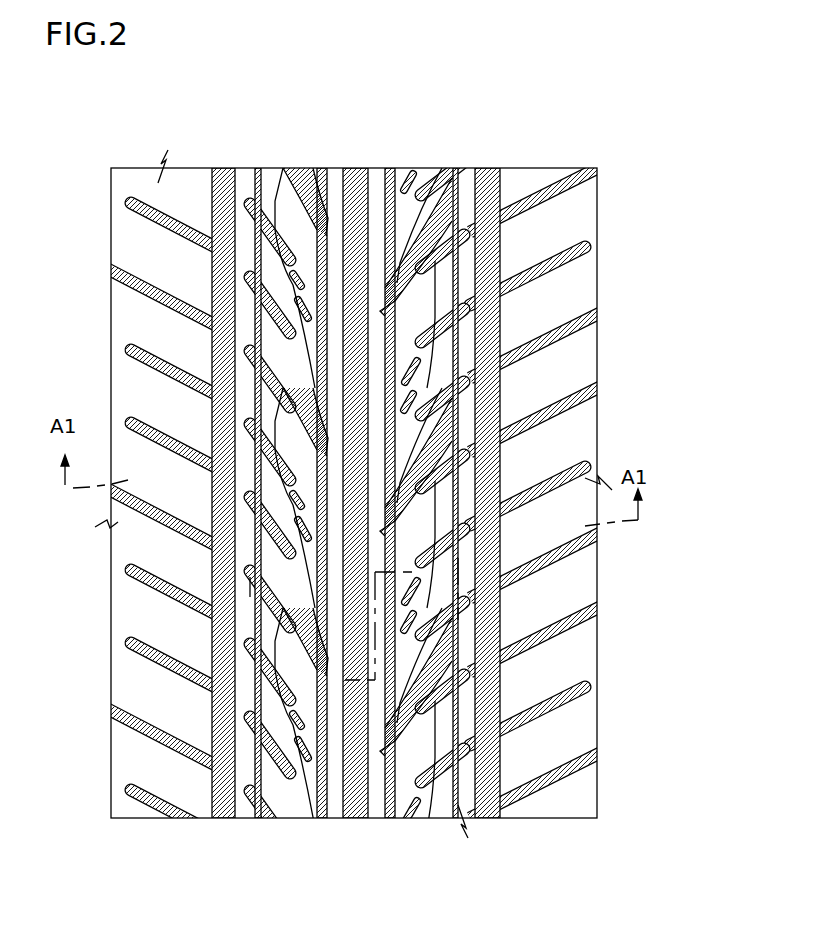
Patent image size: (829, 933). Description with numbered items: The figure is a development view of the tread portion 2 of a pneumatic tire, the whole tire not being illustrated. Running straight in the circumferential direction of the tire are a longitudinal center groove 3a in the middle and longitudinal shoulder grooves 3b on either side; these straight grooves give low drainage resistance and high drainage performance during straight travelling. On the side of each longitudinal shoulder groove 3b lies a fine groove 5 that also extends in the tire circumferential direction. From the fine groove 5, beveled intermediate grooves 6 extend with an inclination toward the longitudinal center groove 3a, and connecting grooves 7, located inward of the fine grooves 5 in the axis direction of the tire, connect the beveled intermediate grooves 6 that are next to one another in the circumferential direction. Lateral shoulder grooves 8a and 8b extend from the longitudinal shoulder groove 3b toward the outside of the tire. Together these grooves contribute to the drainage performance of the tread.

The tread portion 2 is at (100, 146).
The longitudinal center groove 3a is at (358, 168).
The longitudinal shoulder groove 3b is at (215, 718).
The fine groove 5 is at (257, 628).
The beveled intermediate groove 6 is at (285, 395).
The connecting groove 7 is at (315, 342).
The lateral shoulder groove 8a is at (173, 218).
The lateral shoulder groove 8b is at (150, 302).